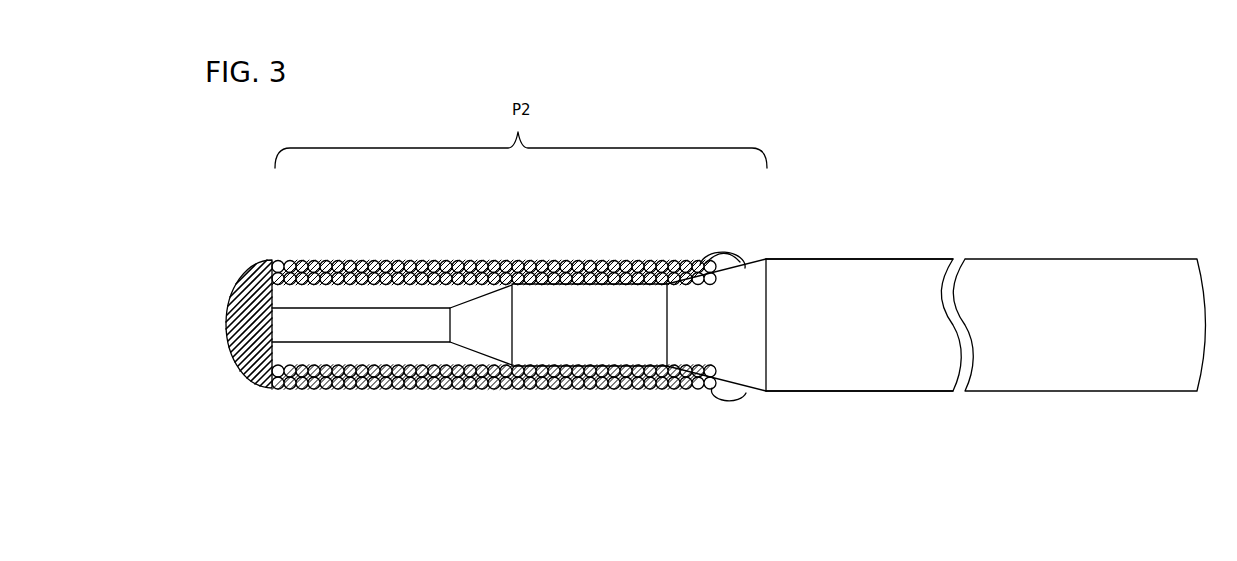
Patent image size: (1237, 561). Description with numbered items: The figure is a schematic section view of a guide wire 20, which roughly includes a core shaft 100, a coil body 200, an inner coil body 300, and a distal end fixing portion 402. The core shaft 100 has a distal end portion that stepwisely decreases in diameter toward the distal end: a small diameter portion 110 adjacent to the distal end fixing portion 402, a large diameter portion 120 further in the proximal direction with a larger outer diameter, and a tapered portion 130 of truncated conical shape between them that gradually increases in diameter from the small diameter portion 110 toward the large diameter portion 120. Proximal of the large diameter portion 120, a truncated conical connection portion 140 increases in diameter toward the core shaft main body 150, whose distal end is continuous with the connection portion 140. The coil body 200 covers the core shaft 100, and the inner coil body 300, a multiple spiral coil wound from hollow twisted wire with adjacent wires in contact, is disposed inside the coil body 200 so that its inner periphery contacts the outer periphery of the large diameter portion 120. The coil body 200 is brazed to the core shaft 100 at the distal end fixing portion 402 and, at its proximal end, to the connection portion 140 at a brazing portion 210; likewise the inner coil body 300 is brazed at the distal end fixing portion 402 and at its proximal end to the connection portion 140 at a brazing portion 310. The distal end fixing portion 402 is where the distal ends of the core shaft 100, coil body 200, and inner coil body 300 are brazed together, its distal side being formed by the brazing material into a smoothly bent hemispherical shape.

The guide wire 20 is at (1081, 234).
The core shaft 100 is at (842, 253).
The small diameter portion 110 is at (343, 320).
The large diameter portion 120 is at (618, 340).
The tapered portion 130 is at (553, 385).
The connection portion 140 is at (745, 355).
The core shaft main body 150 is at (885, 363).
The coil body 200 is at (470, 260).
The brazing portion 210 is at (723, 265).
The inner coil body 300 is at (538, 260).
The brazing portion 310 is at (682, 260).
The distal end fixing portion 402 is at (243, 373).